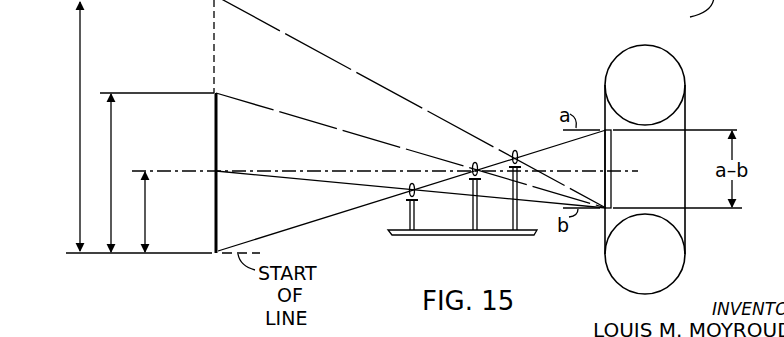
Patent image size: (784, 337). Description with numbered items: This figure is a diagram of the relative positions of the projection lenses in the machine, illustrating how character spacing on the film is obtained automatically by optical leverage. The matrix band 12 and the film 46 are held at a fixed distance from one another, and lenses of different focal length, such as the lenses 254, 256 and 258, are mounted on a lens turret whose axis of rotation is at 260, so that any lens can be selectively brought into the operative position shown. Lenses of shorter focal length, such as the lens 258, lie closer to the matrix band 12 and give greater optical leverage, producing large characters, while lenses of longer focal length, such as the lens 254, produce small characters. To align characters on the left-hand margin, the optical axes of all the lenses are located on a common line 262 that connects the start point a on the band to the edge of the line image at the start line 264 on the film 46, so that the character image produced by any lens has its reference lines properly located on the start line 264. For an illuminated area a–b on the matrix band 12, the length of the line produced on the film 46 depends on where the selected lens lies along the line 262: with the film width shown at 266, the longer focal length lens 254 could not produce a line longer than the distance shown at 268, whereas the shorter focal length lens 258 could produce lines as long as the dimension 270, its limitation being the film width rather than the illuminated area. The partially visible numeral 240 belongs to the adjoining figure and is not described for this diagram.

The matrix band 12 is at (604, 153).
The film 46 is at (219, 151).
The drum 240 is at (661, 8).
The projection lens of longer focal length 254 is at (410, 185).
The projection lens 256 is at (473, 164).
The projection lens of shorter focal length 258 is at (514, 152).
The axis of rotation of lens turret 260 is at (448, 236).
The common line 262 is at (347, 212).
The start line 264 is at (266, 251).
The film width 266 is at (119, 173).
The maximum line length for longer focal length lens 268 is at (151, 212).
The maximum line length for shorter focal length lens 270 is at (86, 126).